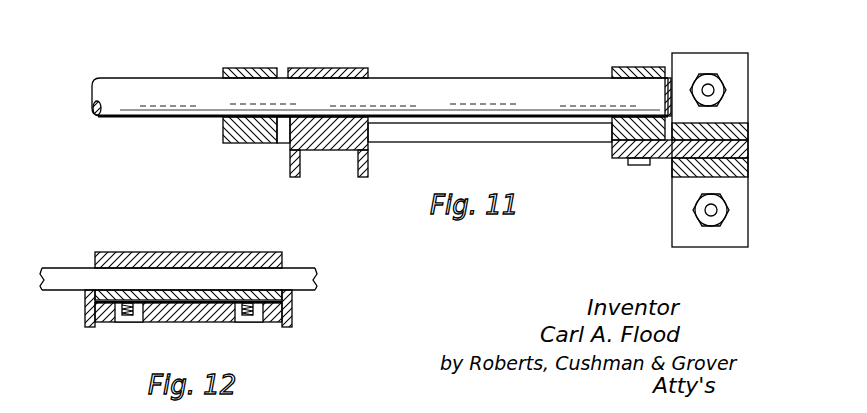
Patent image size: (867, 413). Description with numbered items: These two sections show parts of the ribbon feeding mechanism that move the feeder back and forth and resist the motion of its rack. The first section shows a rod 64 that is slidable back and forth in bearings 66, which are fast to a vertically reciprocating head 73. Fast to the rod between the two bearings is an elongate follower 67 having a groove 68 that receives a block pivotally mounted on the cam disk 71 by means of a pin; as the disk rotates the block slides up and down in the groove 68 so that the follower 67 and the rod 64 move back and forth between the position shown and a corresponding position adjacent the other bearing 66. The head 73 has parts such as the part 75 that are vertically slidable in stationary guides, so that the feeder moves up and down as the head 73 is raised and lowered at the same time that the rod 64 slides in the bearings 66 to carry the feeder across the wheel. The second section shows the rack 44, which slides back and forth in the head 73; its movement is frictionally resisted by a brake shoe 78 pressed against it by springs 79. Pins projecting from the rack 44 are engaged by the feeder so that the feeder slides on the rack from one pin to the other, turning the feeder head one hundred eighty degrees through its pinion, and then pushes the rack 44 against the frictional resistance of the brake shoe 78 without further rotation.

In FIG. 12, the rack 44 is at (297, 272).
In FIG. 11, the rod 64 is at (497, 85).
In FIG. 11, the bearings 66 is at (258, 52).
In FIG. 11, the follower 67 is at (328, 68).
In FIG. 11, the groove 68 is at (358, 165).
In FIG. 11, the cam disk 71 is at (742, 130).
In FIG. 11, the head 73 is at (492, 135).
In FIG. 12, the head 73 is at (115, 260).
In FIG. 11, the part of head 75 is at (740, 152).
In FIG. 12, the brake shoe 78 is at (290, 303).
In FIG. 12, the springs 79 is at (118, 318).